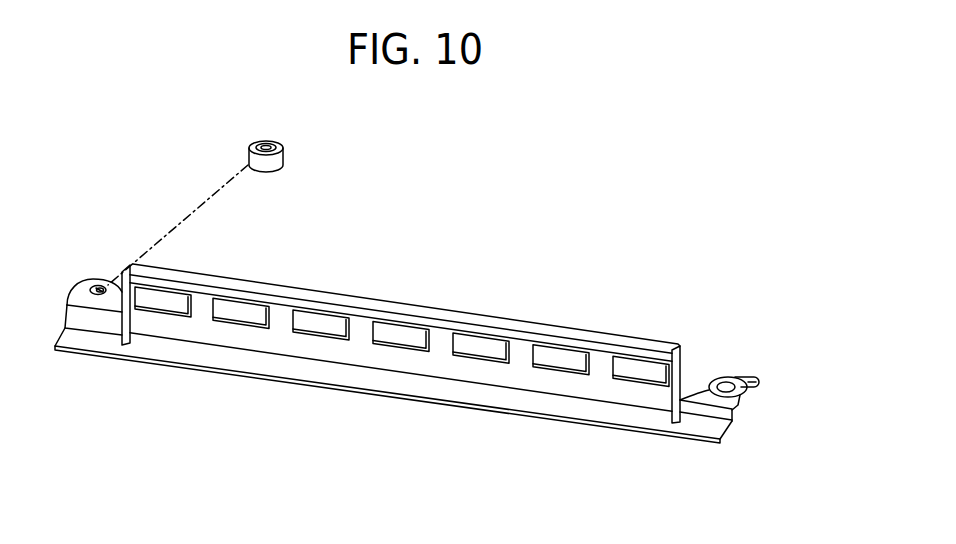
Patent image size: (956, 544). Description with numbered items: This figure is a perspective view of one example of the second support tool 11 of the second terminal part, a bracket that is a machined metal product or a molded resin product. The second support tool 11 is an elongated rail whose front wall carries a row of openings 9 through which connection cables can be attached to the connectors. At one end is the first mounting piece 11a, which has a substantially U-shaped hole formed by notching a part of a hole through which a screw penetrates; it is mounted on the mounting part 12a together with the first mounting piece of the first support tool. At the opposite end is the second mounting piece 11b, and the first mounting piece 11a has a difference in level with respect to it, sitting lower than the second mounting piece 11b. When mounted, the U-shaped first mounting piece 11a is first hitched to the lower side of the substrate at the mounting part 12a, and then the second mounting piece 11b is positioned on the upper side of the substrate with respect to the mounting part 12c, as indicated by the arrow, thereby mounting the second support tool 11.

The openings 9 is at (487, 347).
The second support tool 11 is at (510, 398).
The first mounting piece 11a is at (738, 374).
The second mounting piece 11b is at (83, 288).
The mounting part 12a is at (738, 391).
The mounting part 12c is at (283, 163).